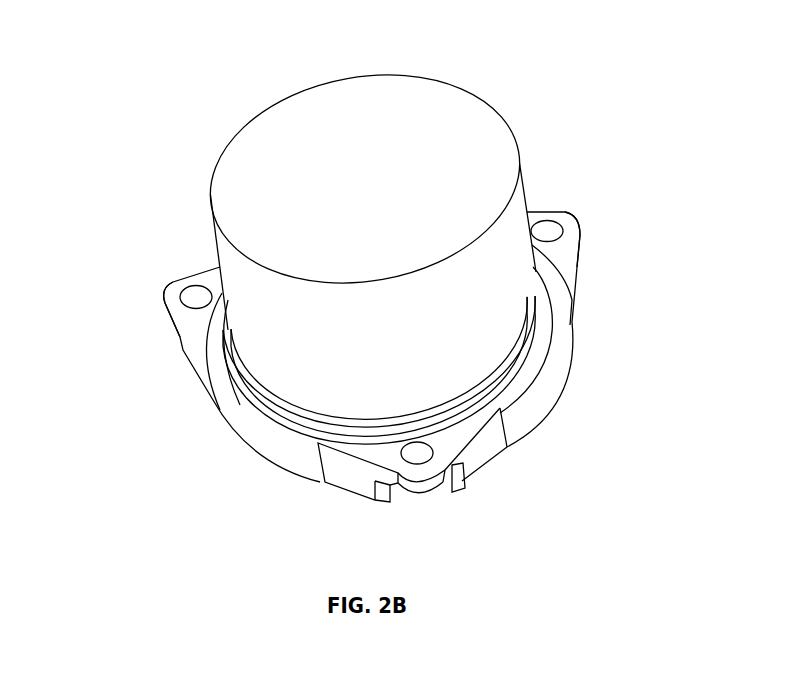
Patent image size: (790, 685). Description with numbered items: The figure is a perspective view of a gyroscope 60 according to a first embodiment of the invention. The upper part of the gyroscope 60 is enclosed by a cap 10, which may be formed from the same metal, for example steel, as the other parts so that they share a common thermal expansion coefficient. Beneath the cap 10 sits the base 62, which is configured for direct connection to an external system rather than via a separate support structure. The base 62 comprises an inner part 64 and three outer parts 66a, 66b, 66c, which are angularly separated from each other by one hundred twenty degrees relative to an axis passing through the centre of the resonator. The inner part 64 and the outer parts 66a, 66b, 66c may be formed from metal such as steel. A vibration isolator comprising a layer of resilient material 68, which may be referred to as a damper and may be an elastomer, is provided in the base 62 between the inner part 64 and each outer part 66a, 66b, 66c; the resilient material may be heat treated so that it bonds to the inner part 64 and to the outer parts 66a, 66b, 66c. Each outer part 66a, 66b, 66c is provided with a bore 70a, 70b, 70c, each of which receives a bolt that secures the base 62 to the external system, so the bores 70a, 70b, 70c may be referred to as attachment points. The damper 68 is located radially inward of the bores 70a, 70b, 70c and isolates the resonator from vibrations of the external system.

The gyroscope 60 is at (152, 57).
The cap 10 is at (447, 107).
The base 62 is at (574, 404).
The inner part 64 is at (257, 398).
The outer part 66a is at (170, 294).
The outer part 66b is at (568, 225).
The outer part 66c is at (443, 450).
The layer of resilient material 68 is at (213, 338).
The bore 70a is at (193, 297).
The bore 70b is at (545, 232).
The bore 70c is at (413, 458).